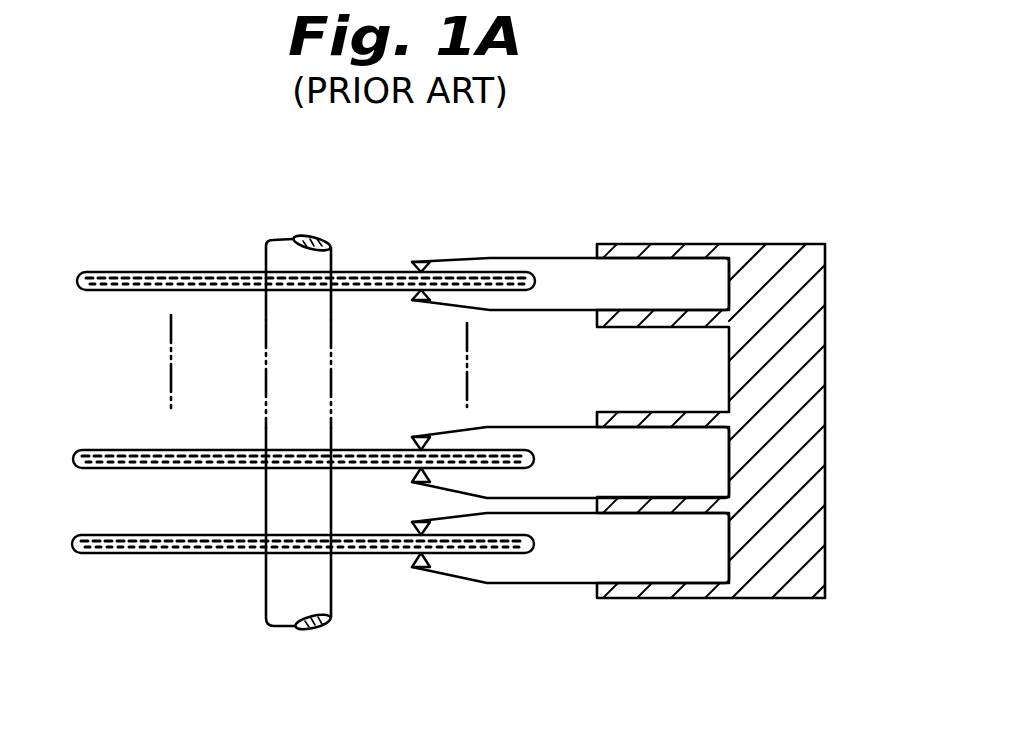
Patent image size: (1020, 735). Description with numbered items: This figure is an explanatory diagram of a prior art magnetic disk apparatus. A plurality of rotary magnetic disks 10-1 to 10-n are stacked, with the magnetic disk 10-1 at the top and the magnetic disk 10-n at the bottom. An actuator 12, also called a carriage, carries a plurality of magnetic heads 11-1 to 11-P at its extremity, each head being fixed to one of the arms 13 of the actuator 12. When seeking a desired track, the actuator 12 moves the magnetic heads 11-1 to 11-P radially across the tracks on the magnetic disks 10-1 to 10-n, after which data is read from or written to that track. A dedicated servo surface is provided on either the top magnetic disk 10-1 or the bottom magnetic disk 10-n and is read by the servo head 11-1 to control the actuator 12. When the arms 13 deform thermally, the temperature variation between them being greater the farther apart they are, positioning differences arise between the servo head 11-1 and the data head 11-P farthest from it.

The rotary magnetic disk 10-1 is at (158, 272).
The rotary magnetic disk 10-n is at (94, 553).
The magnetic head 11-1 is at (562, 255).
The magnetic head 11-P is at (420, 562).
The actuator 12 is at (695, 243).
The arm 13 is at (531, 257).